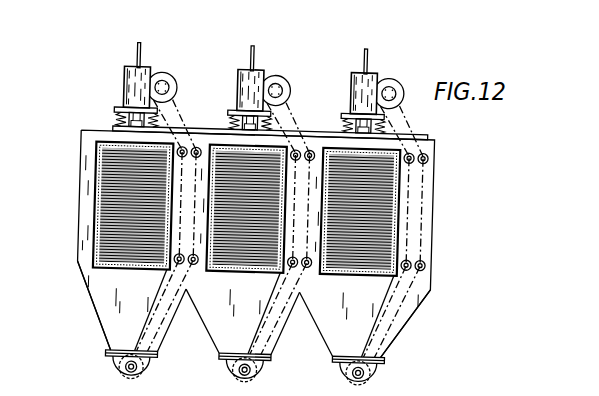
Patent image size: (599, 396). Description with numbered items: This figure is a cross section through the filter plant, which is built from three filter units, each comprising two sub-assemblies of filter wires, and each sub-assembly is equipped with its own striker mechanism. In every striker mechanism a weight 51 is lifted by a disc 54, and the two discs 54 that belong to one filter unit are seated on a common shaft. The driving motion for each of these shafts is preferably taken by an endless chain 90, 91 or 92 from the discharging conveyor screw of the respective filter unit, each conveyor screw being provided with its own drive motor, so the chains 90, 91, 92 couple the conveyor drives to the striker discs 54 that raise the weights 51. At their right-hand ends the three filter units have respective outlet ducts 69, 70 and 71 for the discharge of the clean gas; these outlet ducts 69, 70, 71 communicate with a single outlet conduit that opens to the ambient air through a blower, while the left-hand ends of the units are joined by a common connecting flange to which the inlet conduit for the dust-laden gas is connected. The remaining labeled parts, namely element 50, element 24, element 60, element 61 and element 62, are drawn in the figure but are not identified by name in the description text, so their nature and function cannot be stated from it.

The drive rod 50 is at (137, 50).
The weight 51 is at (121, 76).
The disc 54 is at (166, 79).
The spring mount 24 is at (119, 116).
The first screen panel 60 is at (109, 220).
The third screen panel 62 is at (388, 224).
The outlet duct 69 is at (132, 274).
The outlet duct 70 is at (263, 270).
The outlet duct 71 is at (373, 272).
The partition wall 61 is at (172, 307).
The endless chain 90 is at (153, 325).
The endless chain 91 is at (268, 320).
The endless chain 92 is at (387, 311).